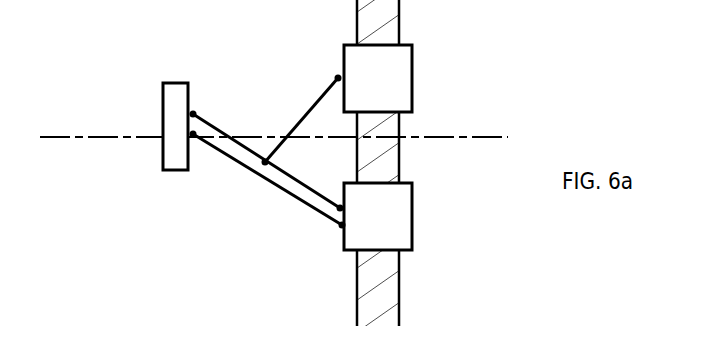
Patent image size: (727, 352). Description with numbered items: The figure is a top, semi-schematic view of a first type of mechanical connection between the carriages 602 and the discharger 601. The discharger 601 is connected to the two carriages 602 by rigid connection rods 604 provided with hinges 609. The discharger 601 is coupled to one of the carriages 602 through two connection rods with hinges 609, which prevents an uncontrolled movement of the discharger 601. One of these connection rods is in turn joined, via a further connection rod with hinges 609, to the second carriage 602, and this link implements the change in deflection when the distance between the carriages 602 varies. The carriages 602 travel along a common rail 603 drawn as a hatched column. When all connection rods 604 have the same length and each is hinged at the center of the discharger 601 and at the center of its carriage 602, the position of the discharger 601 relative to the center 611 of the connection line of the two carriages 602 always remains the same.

The discharger 601 is at (162, 101).
The carriage 602 is at (413, 77).
The column / support rail 603 is at (357, 301).
The linkage struts 604 is at (253, 215).
The hinge 609 is at (194, 114).
The center of the connection line of the two carriages 611 is at (62, 138).